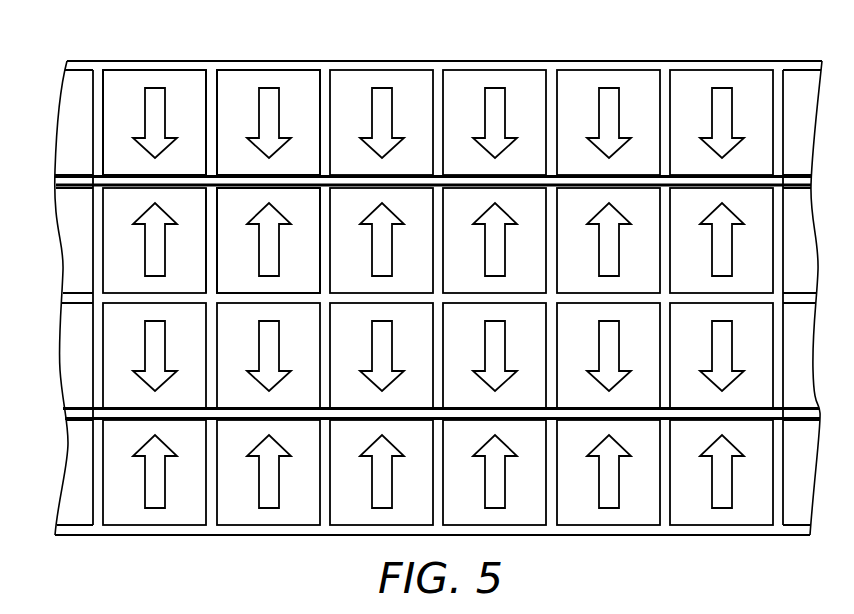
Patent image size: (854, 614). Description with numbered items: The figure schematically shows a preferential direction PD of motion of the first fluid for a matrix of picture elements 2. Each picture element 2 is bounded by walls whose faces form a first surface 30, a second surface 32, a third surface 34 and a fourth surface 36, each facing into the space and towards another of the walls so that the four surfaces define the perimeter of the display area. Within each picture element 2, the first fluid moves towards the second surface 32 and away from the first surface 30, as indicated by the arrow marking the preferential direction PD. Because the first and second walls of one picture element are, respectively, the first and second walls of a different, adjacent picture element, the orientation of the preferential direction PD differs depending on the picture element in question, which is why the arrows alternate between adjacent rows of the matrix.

The picture element 2 is at (125, 166).
The first surface 30 is at (120, 70).
The second surface 32 is at (185, 175).
The third surface 34 is at (206, 84).
The fourth surface 36 is at (103, 125).
The preferential direction PD is at (157, 94).